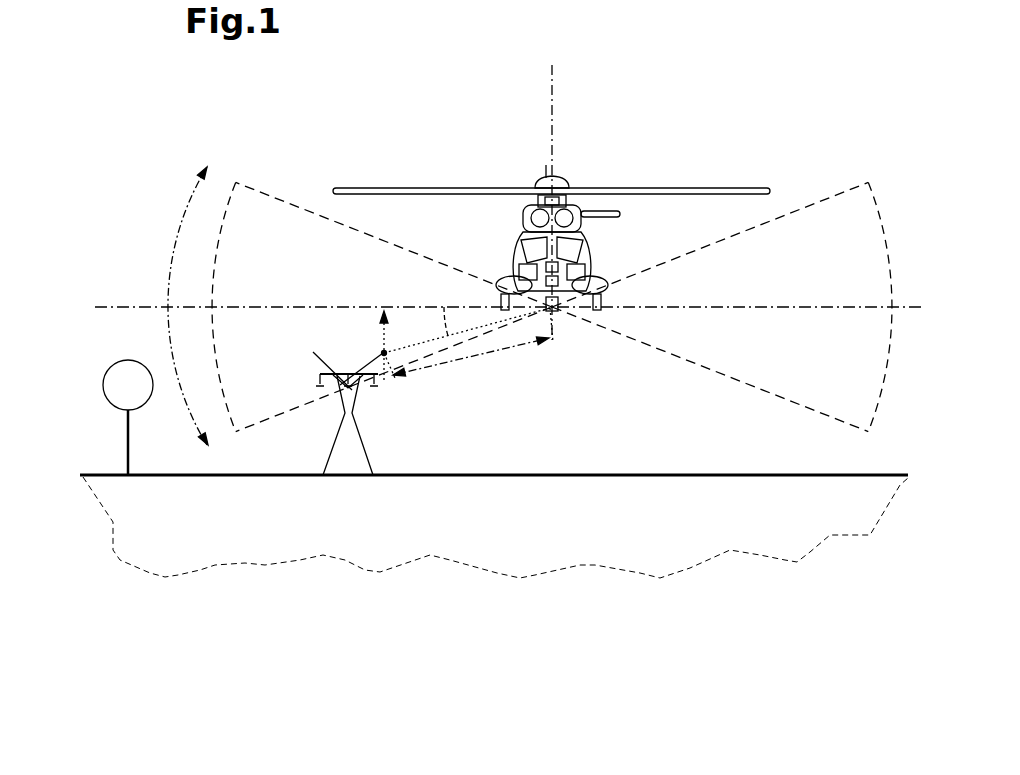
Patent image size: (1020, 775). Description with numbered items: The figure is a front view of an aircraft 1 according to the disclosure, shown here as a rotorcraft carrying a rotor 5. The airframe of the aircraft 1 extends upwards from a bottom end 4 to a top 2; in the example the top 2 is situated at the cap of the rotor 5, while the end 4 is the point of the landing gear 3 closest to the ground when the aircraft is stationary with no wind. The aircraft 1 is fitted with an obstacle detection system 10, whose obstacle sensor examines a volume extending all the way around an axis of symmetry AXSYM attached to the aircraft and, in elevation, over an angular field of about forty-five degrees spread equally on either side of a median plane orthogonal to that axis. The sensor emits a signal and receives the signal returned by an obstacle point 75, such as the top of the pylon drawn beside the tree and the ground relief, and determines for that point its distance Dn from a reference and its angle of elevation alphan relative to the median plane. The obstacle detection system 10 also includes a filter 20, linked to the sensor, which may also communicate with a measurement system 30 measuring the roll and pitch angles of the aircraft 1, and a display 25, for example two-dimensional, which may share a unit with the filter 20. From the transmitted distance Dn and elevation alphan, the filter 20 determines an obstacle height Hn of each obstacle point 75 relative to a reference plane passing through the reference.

The aircraft 1 is at (551, 259).
The top 2 is at (551, 143).
The rotor 5 is at (593, 173).
The landing gear 3 is at (624, 293).
The end 4 is at (597, 312).
The obstacle detection system 10 is at (538, 320).
The filter 20 is at (503, 283).
The display 25 is at (583, 233).
The measurement system 30 is at (520, 243).
The obstacle point 75 is at (392, 354).
The axis of symmetry AXSYM is at (550, 78).
The angle of elevation alphan is at (442, 320).
The obstacle height Hn is at (364, 346).
The distance Dn is at (468, 352).